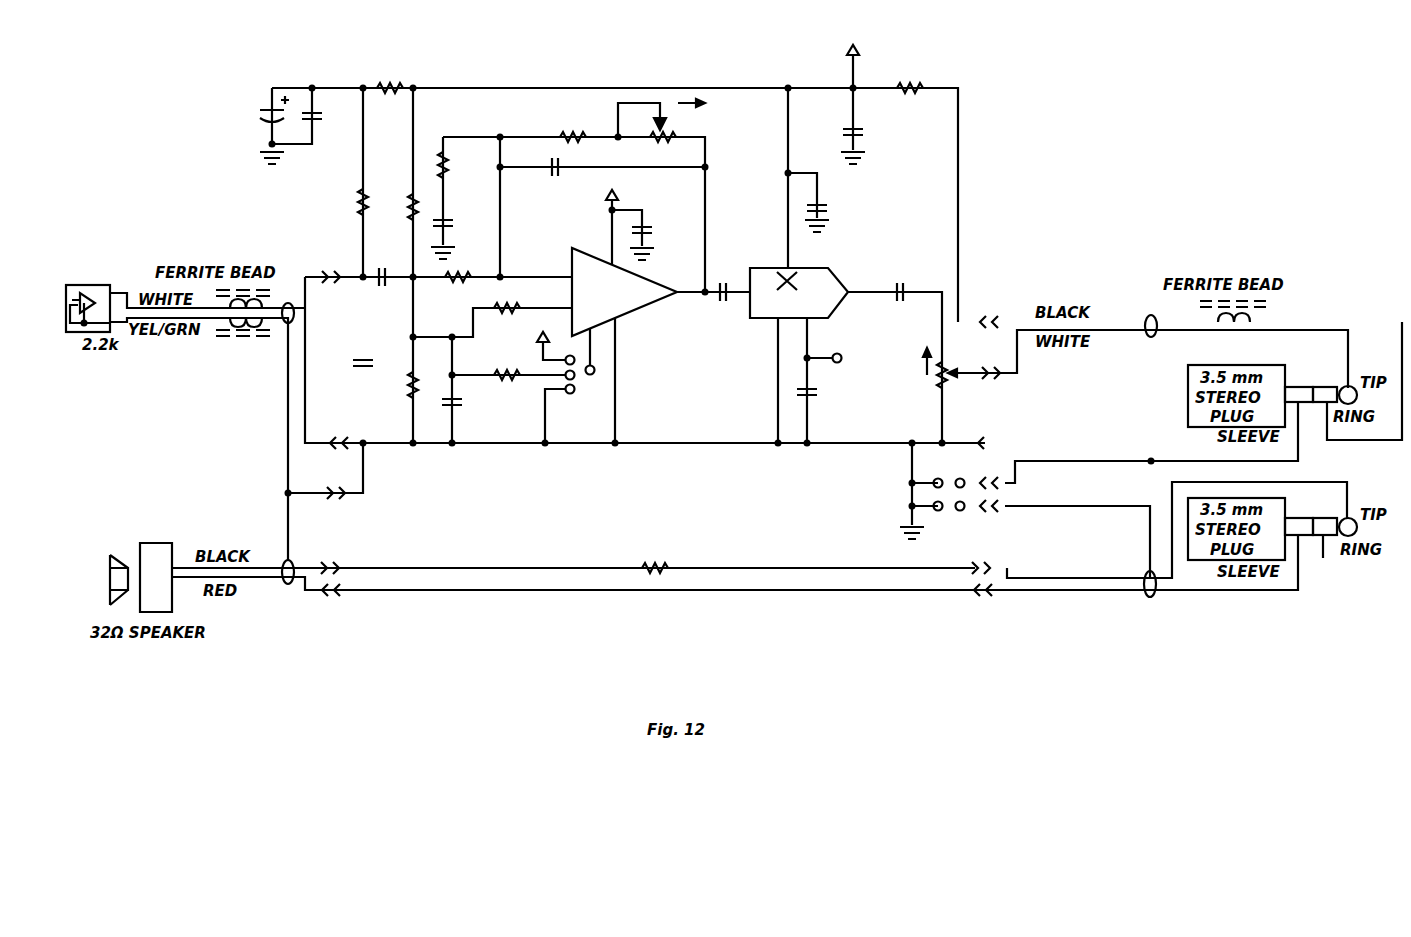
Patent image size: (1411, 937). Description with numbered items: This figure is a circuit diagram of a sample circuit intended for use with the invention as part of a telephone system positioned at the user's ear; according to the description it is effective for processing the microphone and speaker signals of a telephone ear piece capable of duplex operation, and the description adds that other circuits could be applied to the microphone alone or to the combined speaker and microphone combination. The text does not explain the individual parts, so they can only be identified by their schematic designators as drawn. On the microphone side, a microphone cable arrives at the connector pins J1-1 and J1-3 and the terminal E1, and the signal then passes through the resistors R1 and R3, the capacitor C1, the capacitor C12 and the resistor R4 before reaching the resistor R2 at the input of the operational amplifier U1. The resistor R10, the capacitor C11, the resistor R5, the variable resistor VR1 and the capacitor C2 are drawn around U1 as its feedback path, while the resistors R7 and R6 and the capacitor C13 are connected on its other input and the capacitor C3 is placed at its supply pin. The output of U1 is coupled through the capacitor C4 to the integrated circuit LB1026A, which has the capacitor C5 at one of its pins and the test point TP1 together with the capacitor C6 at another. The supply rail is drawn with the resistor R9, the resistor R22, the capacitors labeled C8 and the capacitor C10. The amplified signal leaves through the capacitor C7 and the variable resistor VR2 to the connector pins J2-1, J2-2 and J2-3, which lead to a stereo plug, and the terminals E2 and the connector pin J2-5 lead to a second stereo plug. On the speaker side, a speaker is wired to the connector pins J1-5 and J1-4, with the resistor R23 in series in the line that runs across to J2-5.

The resistor 2.2k R9 is at (391, 68).
The capacitor C8 is at (559, 127).
The capacitor .1uF C10 is at (330, 138).
The resistor 4.7k R1 is at (341, 204).
The resistor 1M R3 is at (401, 195).
The capacitor .1uF C1 is at (387, 256).
The connector J1 pin 1 M+ J1-1 is at (316, 263).
The connector J1 pin 3 M J1-3 is at (323, 456).
The terminal E1 is at (341, 505).
The connector J1 pin 5 S- J1-5 is at (362, 558).
The connector J1 pin 4 S+ J1-4 is at (366, 602).
The capacitor .001uF C12 is at (339, 383).
The resistor 1M R4 is at (398, 394).
The resistor 12k R2 is at (451, 298).
The resistor 12k R10 is at (462, 170).
The capacitor .1uF C11 is at (465, 230).
The resistor 12k R5 is at (574, 118).
The potentiometer 250k VR1 is at (709, 136).
The capacitor 10uF C2 is at (534, 183).
The capacitor .1uF C3 is at (666, 230).
The operational amplifier TLC251C U1 is at (604, 283).
The resistor 1M R7 is at (507, 329).
The resistor 1M R6 is at (515, 396).
The capacitor 1uF C13 is at (473, 412).
The capacitor .047uF C4 is at (714, 318).
The amplifier IC LB1026A is at (798, 295).
The test point TP1 is at (844, 348).
The capacitor 1uF C6 is at (828, 403).
The capacitor .1uF C5 is at (842, 210).
The resistor 200 ohm R22 is at (885, 60).
The capacitor .1uF C7 is at (902, 270).
The potentiometer 50k VR2 is at (942, 359).
The connector J2 pin 1 P J2-1 is at (993, 310).
The connector J2 pin 2 M J2-2 is at (988, 384).
The connector J2 pin 3 C J2-3 is at (986, 431).
The terminal E2 is at (966, 497).
The connector J2 pin 5 S- J2-5 is at (981, 567).
The resistor 10 ohm 1/2w R23 is at (652, 544).